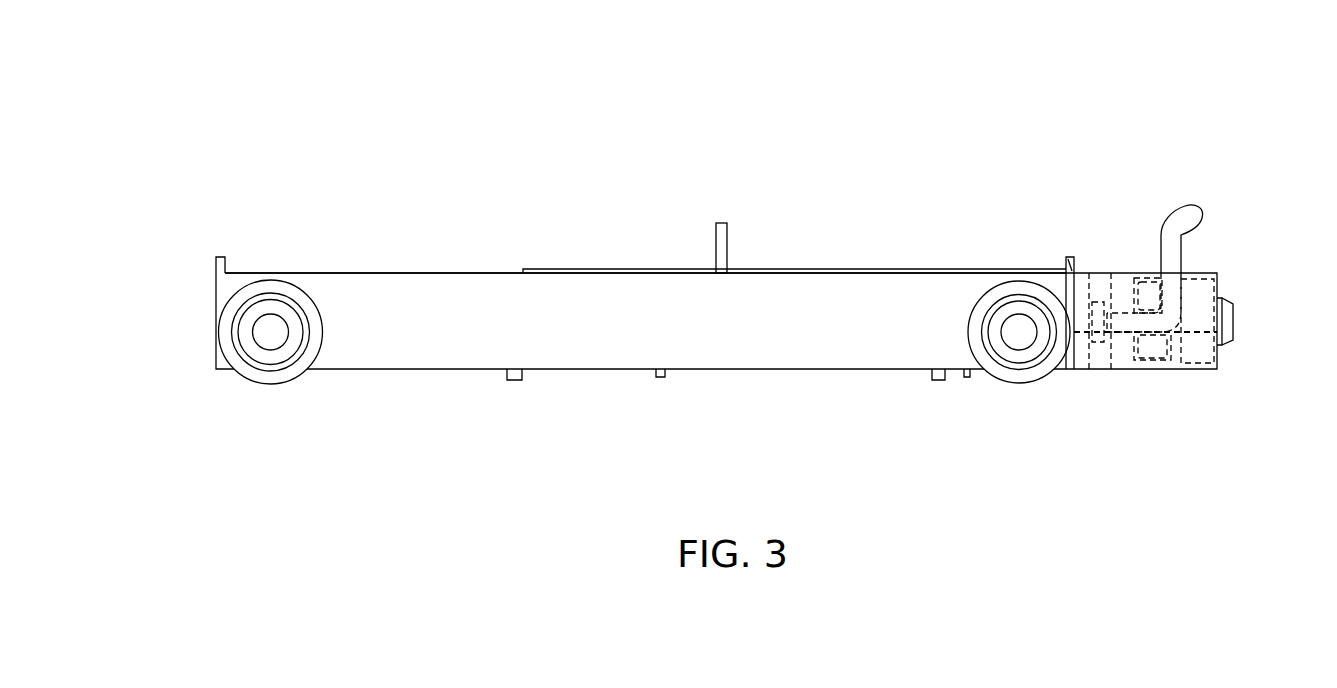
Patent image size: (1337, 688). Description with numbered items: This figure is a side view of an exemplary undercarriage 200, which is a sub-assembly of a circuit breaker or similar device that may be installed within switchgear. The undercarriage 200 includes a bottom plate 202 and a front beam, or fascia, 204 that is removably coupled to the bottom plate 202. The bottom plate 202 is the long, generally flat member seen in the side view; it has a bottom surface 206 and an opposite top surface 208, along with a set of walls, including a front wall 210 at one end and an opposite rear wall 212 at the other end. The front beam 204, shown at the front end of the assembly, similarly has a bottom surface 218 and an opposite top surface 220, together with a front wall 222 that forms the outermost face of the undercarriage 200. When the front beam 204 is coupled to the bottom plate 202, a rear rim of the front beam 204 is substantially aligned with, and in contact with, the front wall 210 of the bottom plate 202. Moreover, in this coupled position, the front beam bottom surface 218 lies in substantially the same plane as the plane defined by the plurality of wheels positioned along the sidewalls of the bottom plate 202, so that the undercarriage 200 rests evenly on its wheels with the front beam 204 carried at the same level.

The undercarriage 200 is at (730, 235).
The bottom plate 202 is at (398, 287).
The front beam 204 is at (1147, 360).
The bottom surface 206 is at (598, 370).
The top surface 208 is at (547, 268).
The front wall 210 is at (1068, 257).
The rear wall 212 is at (220, 284).
The bottom surface 218 is at (1200, 370).
The top surface 220 is at (1121, 272).
The front wall 222 is at (1220, 362).